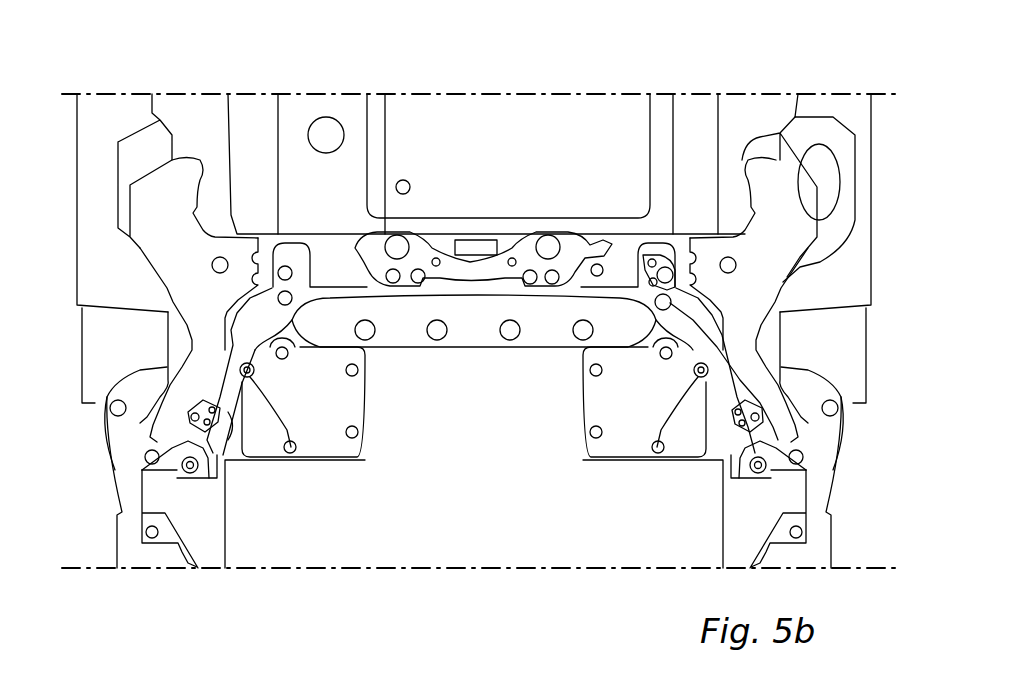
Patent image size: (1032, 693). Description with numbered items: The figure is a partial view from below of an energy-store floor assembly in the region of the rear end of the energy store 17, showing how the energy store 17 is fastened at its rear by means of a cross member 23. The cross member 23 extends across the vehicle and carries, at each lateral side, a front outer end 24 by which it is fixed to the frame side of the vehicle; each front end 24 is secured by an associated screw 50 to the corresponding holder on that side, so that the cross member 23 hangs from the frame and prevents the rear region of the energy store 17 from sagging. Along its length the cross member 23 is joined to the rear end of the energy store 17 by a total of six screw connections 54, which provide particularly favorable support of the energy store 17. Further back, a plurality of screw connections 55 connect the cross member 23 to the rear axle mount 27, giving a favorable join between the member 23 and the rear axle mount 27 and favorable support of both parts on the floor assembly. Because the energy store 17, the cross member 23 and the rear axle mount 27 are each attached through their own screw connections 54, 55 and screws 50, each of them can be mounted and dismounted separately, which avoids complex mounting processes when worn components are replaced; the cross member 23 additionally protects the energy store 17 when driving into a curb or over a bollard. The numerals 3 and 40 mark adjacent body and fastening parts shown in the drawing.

The vehicle body 3 is at (133, 558).
The energy store 17 is at (535, 537).
The cross member 23 is at (473, 312).
The front outer ends 24 is at (160, 440).
The rear axle mount 27 is at (393, 240).
The fastening bolt 40 is at (200, 480).
The screw 50 is at (192, 465).
The screw connections 54 is at (365, 330).
The screw connections 55 is at (285, 298).